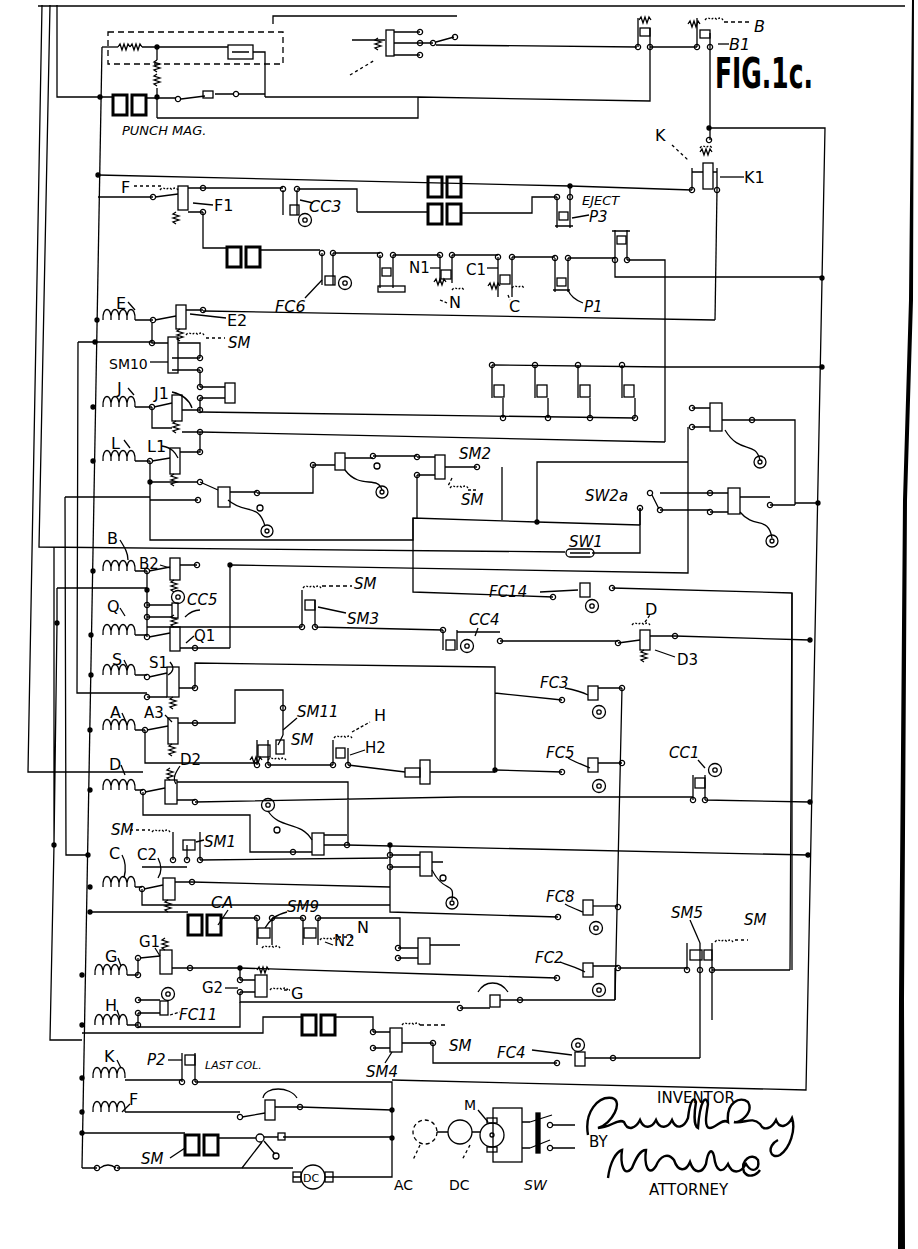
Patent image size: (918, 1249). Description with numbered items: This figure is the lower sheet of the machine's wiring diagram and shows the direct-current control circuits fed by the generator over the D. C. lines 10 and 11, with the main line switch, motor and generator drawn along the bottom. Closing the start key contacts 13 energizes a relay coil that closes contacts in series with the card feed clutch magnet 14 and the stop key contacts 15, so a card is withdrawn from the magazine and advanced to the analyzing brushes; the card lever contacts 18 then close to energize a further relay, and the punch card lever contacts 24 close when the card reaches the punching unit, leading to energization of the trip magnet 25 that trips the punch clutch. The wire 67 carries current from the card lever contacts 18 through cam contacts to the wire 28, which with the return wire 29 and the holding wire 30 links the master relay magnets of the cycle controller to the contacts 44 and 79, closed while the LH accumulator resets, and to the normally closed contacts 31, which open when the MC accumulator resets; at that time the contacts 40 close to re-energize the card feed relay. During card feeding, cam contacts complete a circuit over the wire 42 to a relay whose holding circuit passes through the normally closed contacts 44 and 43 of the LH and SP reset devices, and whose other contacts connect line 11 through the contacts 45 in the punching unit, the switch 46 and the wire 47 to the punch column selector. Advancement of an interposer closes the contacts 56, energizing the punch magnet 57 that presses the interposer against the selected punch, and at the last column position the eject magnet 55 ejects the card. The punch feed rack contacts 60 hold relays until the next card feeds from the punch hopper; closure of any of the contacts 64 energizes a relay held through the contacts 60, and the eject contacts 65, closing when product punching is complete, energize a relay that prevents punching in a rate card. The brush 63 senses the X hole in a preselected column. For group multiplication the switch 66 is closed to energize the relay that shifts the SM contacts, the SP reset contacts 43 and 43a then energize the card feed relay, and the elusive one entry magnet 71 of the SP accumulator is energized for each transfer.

The D. C. line 10 is at (118, 258).
The D. C. line 11 is at (824, 233).
The start key contacts 13 is at (432, 960).
The card feed clutch magnet 14 is at (237, 255).
The stop key contacts 15 is at (388, 265).
The card lever contacts 18 is at (480, 1005).
The punch card lever contacts 24 is at (262, 1108).
The trip magnet 25 is at (462, 215).
The wire 28 is at (45, 160).
The wire 29 is at (68, 52).
The wire 30 is at (38, 125).
The contacts 31 is at (348, 838).
The contacts 40 is at (432, 852).
The wire 42 is at (56, 624).
The contacts 43 is at (730, 515).
The lower contacts 43a is at (216, 490).
The contacts 44 is at (722, 392).
The contacts 45 is at (640, 40).
The switch 46 is at (458, 37).
The wire 47 is at (305, 25).
The eject magnet 55 is at (462, 190).
The contacts 56 is at (212, 100).
The punch magnet 57 is at (118, 118).
The punch feed rack contacts 60 is at (630, 248).
The brush 63 is at (420, 760).
The contacts 64 is at (578, 378).
The eject contacts 65 is at (240, 375).
The switch 66 is at (245, 1165).
The wire 67 is at (762, 592).
The elusive one entry magnet 71 is at (330, 1015).
The contacts 79 is at (330, 470).